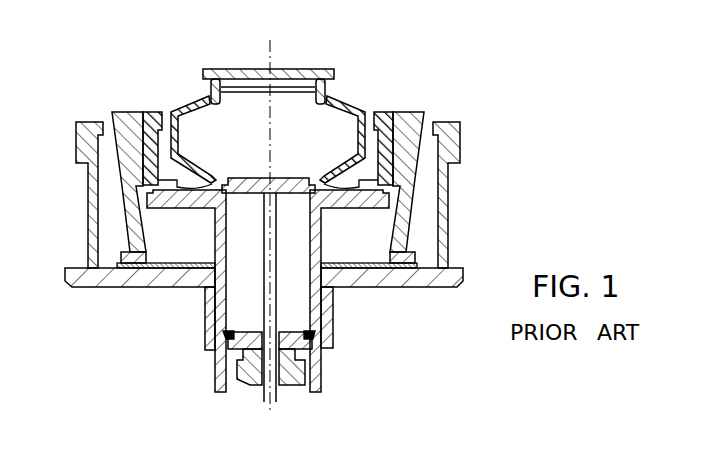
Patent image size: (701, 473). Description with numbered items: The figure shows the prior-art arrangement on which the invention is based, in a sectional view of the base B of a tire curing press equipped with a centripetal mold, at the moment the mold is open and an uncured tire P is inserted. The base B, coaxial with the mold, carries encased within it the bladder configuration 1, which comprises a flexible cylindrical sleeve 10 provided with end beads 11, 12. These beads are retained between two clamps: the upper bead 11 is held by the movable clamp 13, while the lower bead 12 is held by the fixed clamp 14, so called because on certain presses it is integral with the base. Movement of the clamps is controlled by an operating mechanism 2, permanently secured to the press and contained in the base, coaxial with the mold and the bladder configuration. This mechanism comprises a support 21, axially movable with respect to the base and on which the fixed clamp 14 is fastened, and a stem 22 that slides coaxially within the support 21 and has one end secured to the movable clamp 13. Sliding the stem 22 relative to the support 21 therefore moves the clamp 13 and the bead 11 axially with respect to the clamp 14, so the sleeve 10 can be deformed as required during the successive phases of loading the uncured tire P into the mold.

The bladder configuration 1 is at (300, 150).
The uncured tire P is at (353, 117).
The end bead 11 is at (370, 152).
The movable clamp 13 is at (240, 186).
The flexible cylindrical sleeve 10 is at (323, 232).
The stem 22 is at (271, 278).
The base B is at (123, 284).
The end bead 12 is at (327, 348).
The fixed clamp 14 is at (240, 348).
The support 21 is at (243, 367).
The operating mechanism 2 is at (300, 396).